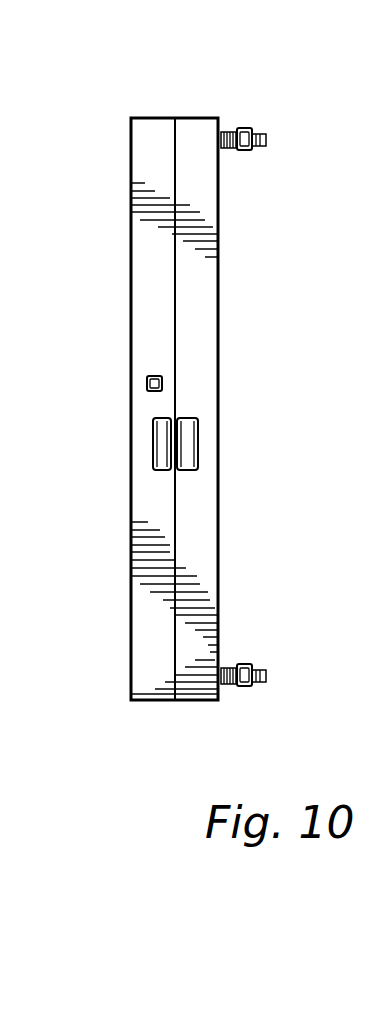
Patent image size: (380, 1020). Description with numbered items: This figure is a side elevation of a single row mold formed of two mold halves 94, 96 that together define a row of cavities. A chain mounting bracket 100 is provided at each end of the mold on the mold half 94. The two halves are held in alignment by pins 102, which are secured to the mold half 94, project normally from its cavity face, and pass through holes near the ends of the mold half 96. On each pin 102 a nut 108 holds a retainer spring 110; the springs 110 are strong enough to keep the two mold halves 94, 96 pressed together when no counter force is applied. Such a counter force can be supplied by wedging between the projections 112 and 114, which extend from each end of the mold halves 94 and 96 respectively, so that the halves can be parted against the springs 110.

The mold half 94 is at (131, 497).
The mold half 96 is at (218, 550).
The chain mounting bracket 100 is at (162, 383).
The pin 102 is at (262, 148).
The nut 108 is at (250, 128).
The retainer spring 110 is at (229, 131).
The projection 112 is at (165, 417).
The projection 114 is at (198, 445).